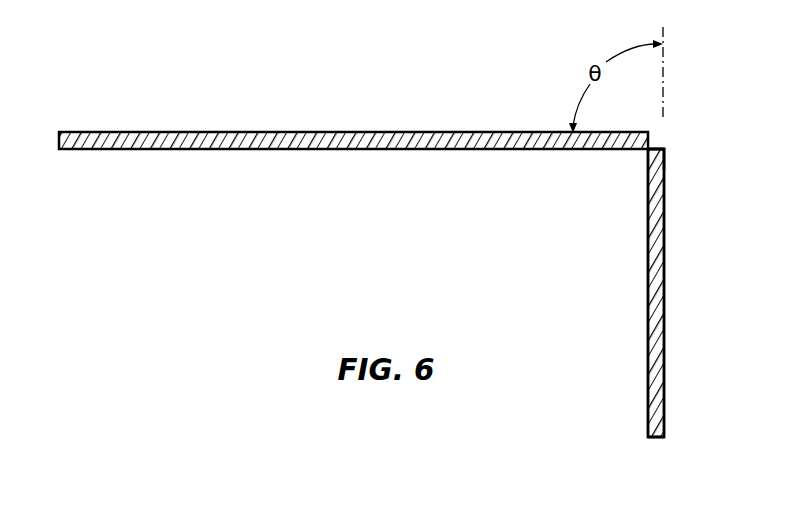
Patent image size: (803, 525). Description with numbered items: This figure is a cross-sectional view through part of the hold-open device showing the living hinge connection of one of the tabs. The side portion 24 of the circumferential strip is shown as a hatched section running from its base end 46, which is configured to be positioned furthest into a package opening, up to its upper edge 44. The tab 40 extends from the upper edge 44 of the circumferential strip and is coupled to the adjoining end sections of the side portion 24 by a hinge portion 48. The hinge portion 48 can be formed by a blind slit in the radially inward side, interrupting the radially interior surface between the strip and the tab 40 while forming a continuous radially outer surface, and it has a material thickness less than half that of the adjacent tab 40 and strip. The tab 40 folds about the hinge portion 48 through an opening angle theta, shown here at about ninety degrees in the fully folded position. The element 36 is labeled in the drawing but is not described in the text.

The first panel portion 40 is at (154, 142).
The second panel portion 36 is at (646, 279).
The wall 24 is at (658, 325).
The bend 44 is at (666, 142).
The lower end 46 is at (662, 442).
The upper end 48 is at (665, 145).